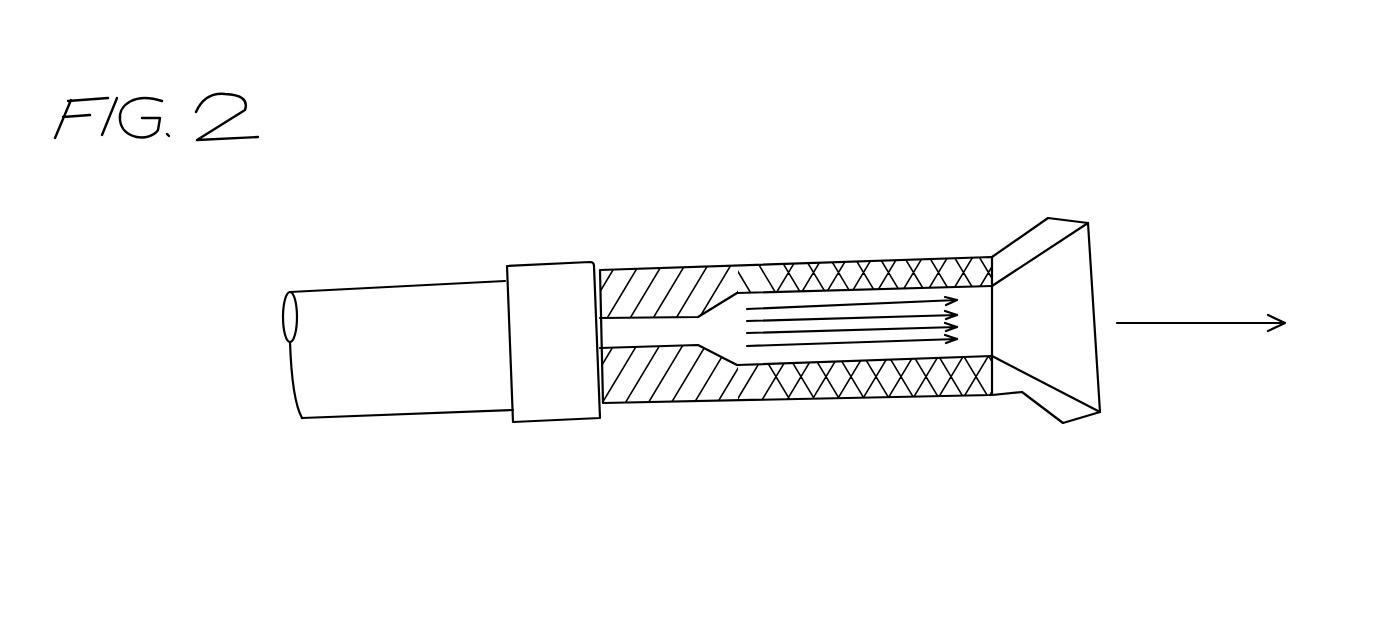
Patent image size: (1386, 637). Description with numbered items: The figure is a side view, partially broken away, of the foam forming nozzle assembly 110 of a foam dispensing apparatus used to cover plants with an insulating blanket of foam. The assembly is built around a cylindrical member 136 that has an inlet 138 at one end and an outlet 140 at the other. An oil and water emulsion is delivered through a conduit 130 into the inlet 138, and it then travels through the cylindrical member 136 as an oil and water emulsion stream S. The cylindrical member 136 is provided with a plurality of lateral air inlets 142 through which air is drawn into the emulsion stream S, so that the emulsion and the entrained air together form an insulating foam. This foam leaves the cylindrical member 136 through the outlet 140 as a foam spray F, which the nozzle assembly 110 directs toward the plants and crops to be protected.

The foam forming nozzle assembly 110 is at (1114, 145).
The conduit 130 is at (337, 288).
The cylindrical member 136 is at (625, 267).
The inlet 138 is at (558, 421).
The outlet 140 is at (1095, 254).
The lateral air inlets 142 is at (930, 400).
The oil and water emulsion stream S is at (798, 305).
The foam spray F is at (1218, 327).